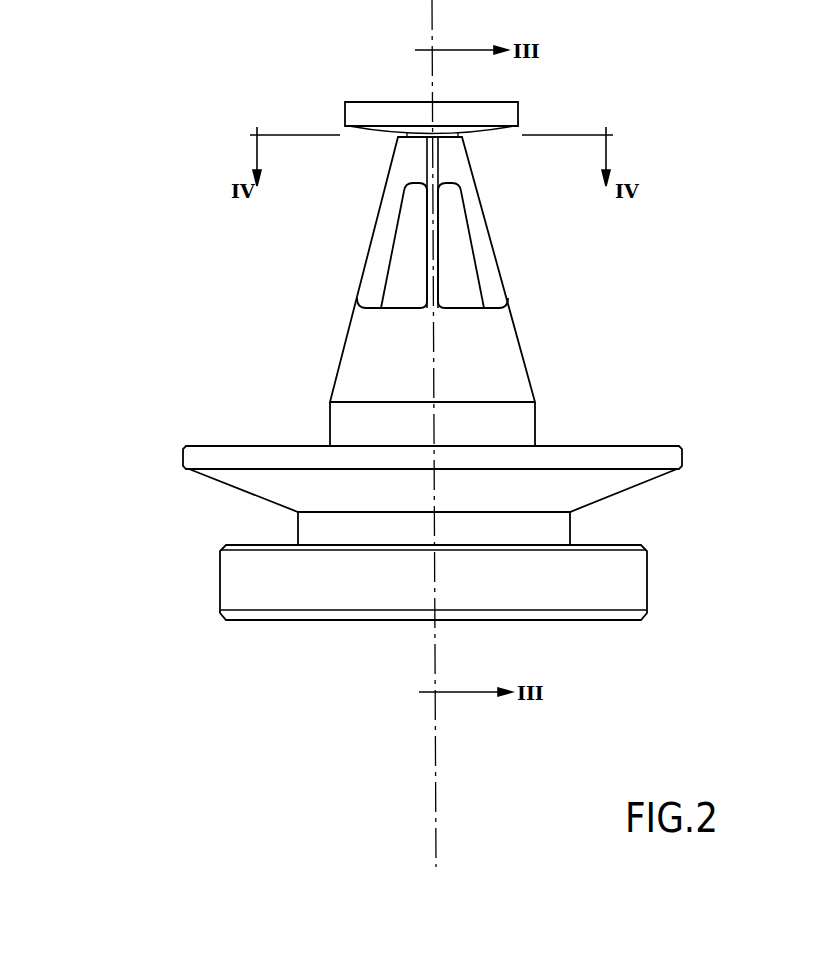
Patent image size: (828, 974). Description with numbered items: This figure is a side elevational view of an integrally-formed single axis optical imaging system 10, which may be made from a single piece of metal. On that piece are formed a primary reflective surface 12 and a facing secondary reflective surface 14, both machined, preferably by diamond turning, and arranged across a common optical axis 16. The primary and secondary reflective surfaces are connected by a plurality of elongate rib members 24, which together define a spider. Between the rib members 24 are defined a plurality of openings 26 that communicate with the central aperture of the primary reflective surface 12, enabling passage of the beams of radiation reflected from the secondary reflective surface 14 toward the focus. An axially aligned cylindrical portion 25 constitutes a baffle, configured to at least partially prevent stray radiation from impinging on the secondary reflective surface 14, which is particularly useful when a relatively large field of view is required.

The integrally-formed single axis optical imaging system 10 is at (134, 303).
The primary reflective surface 12 is at (614, 445).
The secondary reflective surface 14 is at (486, 131).
The common optical axis 16 is at (435, 722).
The elongate rib members 24 is at (380, 264).
The cylindrical portion 25 is at (530, 373).
The openings 26 is at (406, 236).